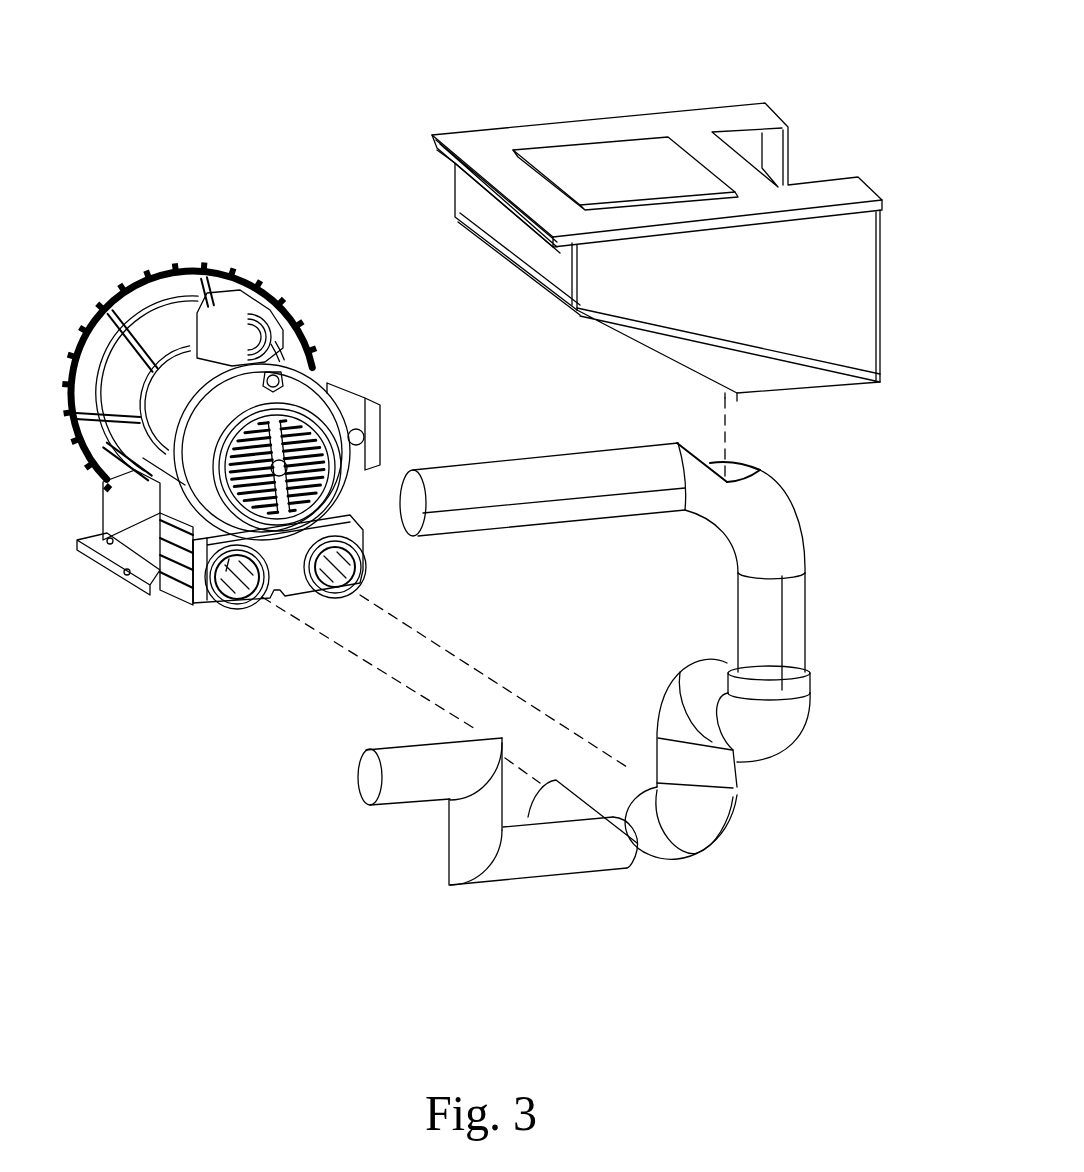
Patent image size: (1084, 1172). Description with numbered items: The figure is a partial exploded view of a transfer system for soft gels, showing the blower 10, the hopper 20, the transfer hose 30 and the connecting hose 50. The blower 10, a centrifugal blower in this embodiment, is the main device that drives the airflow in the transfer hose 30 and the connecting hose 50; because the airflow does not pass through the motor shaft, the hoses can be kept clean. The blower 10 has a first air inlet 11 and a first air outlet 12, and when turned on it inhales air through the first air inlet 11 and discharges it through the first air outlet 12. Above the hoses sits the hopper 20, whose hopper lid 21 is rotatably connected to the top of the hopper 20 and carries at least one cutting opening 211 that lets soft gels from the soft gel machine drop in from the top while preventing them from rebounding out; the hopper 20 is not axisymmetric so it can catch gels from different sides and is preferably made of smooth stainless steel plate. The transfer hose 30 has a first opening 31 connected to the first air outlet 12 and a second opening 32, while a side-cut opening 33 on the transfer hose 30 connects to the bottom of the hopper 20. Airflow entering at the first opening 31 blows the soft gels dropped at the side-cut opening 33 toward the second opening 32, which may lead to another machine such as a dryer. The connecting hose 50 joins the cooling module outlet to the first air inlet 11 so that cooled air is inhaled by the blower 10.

The blower 10 is at (118, 296).
The first air inlet 11 is at (193, 607).
The first air outlet 12 is at (367, 563).
The hopper 20 is at (860, 305).
The hopper lid 21 is at (450, 135).
The cutting opening 211 is at (610, 157).
The transfer hose 30 is at (790, 618).
The first opening 31 is at (633, 767).
The second opening 32 is at (413, 503).
The side-cut opening 33 is at (742, 463).
The connecting hose 50 is at (468, 840).